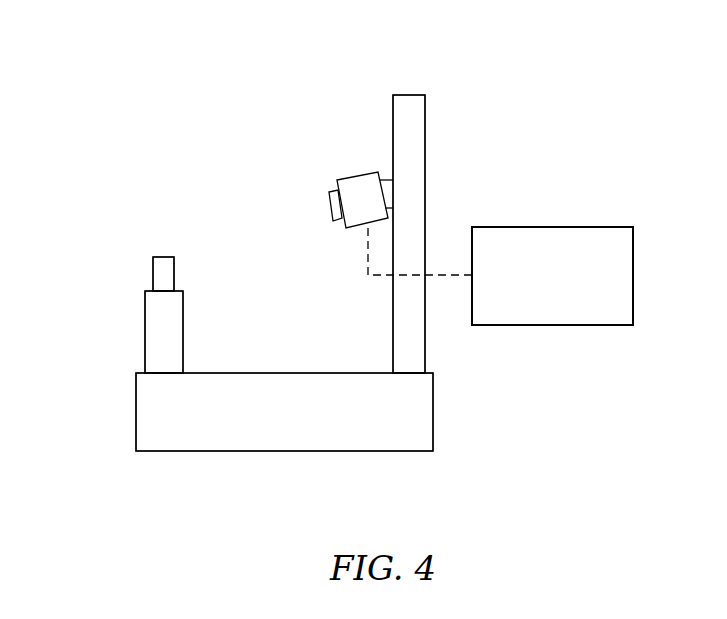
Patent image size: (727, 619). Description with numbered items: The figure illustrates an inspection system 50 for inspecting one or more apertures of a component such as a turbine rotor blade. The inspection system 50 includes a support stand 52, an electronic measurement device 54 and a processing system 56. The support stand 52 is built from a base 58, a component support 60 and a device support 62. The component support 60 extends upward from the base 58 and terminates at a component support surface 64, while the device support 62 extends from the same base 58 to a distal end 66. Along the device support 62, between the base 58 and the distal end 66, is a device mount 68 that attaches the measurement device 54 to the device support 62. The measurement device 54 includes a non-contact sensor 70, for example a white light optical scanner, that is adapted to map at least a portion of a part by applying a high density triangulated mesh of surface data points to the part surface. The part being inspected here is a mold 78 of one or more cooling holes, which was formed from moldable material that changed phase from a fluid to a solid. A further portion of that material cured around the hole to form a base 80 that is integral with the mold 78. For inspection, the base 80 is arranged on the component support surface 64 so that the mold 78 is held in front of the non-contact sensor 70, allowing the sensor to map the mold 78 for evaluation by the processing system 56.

The inspection system 50 is at (192, 79).
The support stand 52 is at (168, 455).
The electronic measurement device 54 is at (344, 171).
The processing system 56 is at (553, 227).
The base 58 is at (267, 425).
The component support 60 is at (145, 342).
The device support 62 is at (426, 341).
The component support surface 64 is at (183, 290).
The distal end 66 is at (415, 94).
The device mount 68 is at (388, 190).
The non-contact sensor 70 is at (353, 228).
The mold 78 is at (153, 263).
The base 80 is at (163, 274).